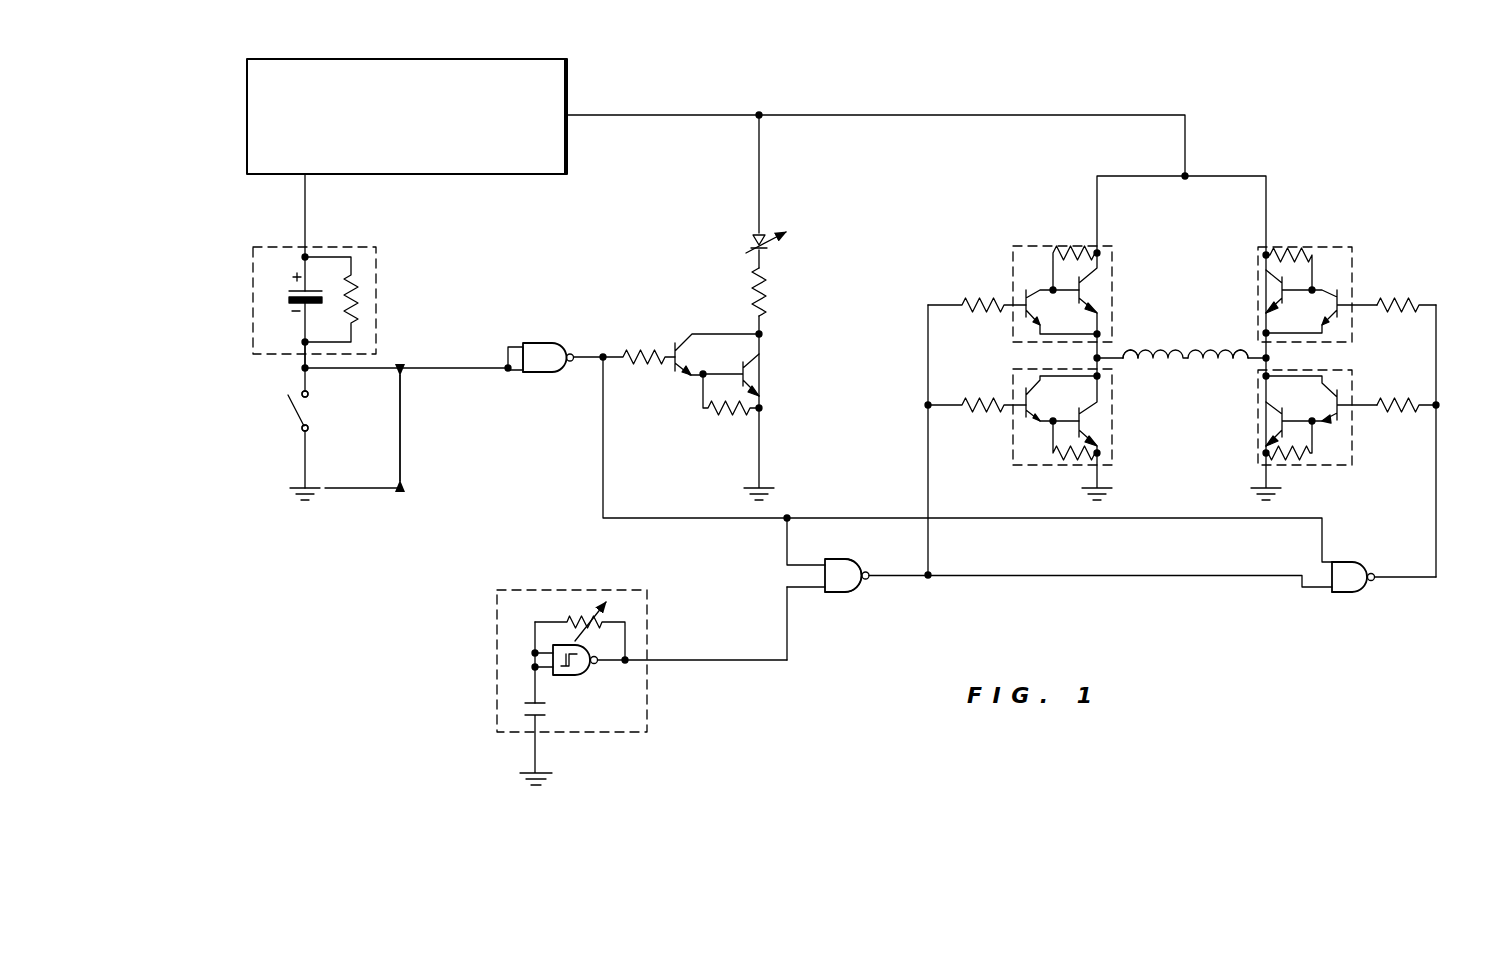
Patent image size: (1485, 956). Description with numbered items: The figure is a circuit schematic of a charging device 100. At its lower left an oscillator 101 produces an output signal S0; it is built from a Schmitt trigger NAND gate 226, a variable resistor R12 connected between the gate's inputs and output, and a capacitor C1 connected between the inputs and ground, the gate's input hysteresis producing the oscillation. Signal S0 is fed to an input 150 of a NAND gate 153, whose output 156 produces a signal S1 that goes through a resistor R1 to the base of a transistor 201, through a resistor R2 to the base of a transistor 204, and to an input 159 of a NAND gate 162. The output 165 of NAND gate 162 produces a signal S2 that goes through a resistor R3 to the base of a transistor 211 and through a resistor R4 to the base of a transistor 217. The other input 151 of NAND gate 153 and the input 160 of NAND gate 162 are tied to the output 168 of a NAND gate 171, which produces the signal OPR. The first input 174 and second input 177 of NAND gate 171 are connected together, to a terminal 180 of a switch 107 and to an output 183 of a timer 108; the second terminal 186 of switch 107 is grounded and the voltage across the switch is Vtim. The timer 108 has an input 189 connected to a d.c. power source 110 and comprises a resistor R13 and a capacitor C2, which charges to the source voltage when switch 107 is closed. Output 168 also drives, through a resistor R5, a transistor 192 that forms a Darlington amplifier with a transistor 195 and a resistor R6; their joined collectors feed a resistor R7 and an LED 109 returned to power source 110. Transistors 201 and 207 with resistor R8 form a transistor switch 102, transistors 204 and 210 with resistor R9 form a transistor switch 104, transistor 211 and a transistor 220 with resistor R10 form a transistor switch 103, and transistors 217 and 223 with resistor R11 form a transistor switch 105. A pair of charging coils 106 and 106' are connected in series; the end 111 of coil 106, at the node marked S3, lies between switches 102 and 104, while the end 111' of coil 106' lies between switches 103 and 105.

The charging device 100 is at (466, 656).
The oscillator 101 is at (516, 592).
The transistor switch 102 is at (1025, 246).
The transistor switch 103 is at (1342, 247).
The transistor switch 104 is at (1026, 468).
The transistor switch 105 is at (1346, 468).
The charging coil 106 is at (1155, 380).
The charging coil 106' is at (1227, 380).
The switch 107 is at (309, 410).
The timer 108 is at (378, 250).
The LED 109 is at (756, 238).
The d.c. power source 110 is at (566, 86).
The end of charging coil 111 is at (1145, 331).
The end of charging coil 111' is at (1234, 331).
The input of NAND gate 150 is at (823, 592).
The input of NAND gate 151 is at (818, 561).
The NAND gate 153 is at (859, 594).
The output of NAND gate 156 is at (874, 579).
The input of NAND gate 159 is at (1331, 592).
The input of NAND gate 160 is at (1328, 560).
The NAND gate 162 is at (1358, 594).
The output of NAND gate 165 is at (1384, 581).
The output of NAND gate 168 is at (571, 352).
The NAND gate 171 is at (543, 374).
The first input of NAND gate 174 is at (522, 345).
The second input of NAND gate 177 is at (508, 372).
The terminal of switch 180 is at (300, 395).
The output of timer 183 is at (295, 342).
The second terminal of switch 186 is at (300, 430).
The input of timer 189 is at (303, 254).
The transistor 192 is at (675, 337).
The transistor 195 is at (770, 374).
The transistor 201 is at (1021, 294).
The transistor 204 is at (1027, 426).
The transistor 207 is at (1099, 282).
The transistor 210 is at (1099, 429).
The transistor 211 is at (1343, 296).
The transistor 217 is at (1344, 396).
The transistor 220 is at (1274, 287).
The transistor 223 is at (1274, 426).
The Schmitt trigger NAND gate 226 is at (591, 676).
The resistor R1 is at (988, 312).
The resistor R2 is at (986, 402).
The resistor R3 is at (1401, 310).
The resistor R4 is at (1406, 410).
The resistor R5 is at (646, 352).
The resistor R6 is at (738, 411).
The resistor R7 is at (768, 287).
The resistor R8 is at (1078, 251).
The resistor R9 is at (1076, 461).
The resistor R10 is at (1294, 251).
The resistor R11 is at (1296, 460).
The variable resistor R12 is at (580, 604).
The resistor R13 is at (353, 302).
The capacitor C1 is at (547, 707).
The capacitor C2 is at (288, 296).
The output signal S0 is at (748, 664).
The signal S1 is at (928, 497).
The signal S2 is at (1436, 530).
The coil node S3 is at (1095, 359).
The signal OPR is at (672, 518).
The voltage Vtim is at (377, 431).